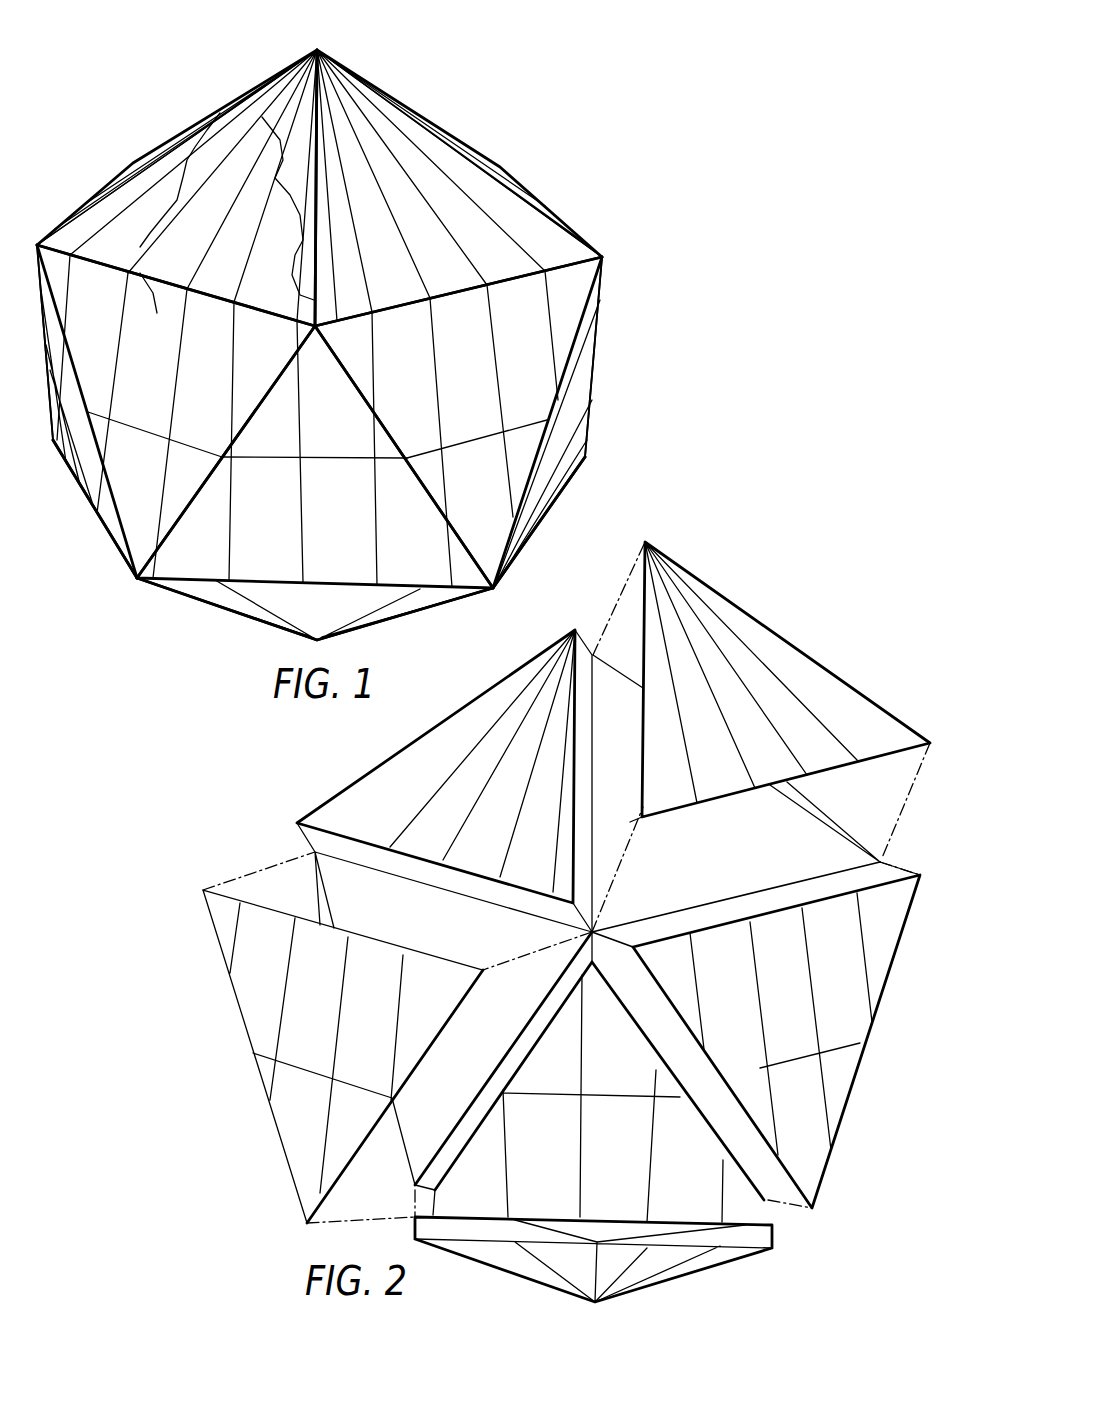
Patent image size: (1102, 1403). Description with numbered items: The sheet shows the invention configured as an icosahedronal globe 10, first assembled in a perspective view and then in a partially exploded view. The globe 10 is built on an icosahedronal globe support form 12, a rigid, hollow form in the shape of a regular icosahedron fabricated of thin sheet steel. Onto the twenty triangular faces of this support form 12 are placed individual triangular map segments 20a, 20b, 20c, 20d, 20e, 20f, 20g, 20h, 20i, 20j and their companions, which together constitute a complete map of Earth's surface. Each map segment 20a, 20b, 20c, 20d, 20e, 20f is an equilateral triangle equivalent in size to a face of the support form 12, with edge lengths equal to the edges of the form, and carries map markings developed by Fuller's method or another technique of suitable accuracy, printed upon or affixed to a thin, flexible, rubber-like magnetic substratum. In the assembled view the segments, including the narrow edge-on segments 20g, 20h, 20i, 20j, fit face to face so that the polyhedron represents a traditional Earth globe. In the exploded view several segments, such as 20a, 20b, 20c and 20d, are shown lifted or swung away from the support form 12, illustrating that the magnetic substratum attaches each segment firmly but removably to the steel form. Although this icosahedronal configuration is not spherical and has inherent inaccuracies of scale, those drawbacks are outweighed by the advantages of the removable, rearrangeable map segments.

In FIG. 1, the icosahedronal globe 10 is at (619, 223).
In FIG. 2, the icosahedronal globe 10 is at (253, 778).
In FIG. 2, the icosahedronal globe support form 12 is at (347, 883).
In FIG. 1, the triangular map segment 20a is at (250, 116).
In FIG. 2, the triangular map segment 20a is at (438, 735).
In FIG. 1, the triangular map segment 20b is at (385, 93).
In FIG. 2, the triangular map segment 20b is at (712, 597).
In FIG. 1, the triangular map segment 20c is at (137, 545).
In FIG. 2, the triangular map segment 20c is at (257, 1013).
In FIG. 1, the triangular map segment 20d is at (523, 353).
In FIG. 2, the triangular map segment 20d is at (810, 1172).
In FIG. 1, the triangular map segment 20e is at (248, 557).
In FIG. 2, the triangular map segment 20e is at (705, 1190).
In FIG. 1, the triangular map segment 20f is at (278, 603).
In FIG. 2, the triangular map segment 20f is at (687, 1283).
In FIG. 1, the triangular map segment 20g is at (133, 162).
In FIG. 1, the triangular map segment 20h is at (493, 158).
In FIG. 1, the triangular map segment 20i is at (87, 477).
In FIG. 1, the triangular map segment 20j is at (522, 537).